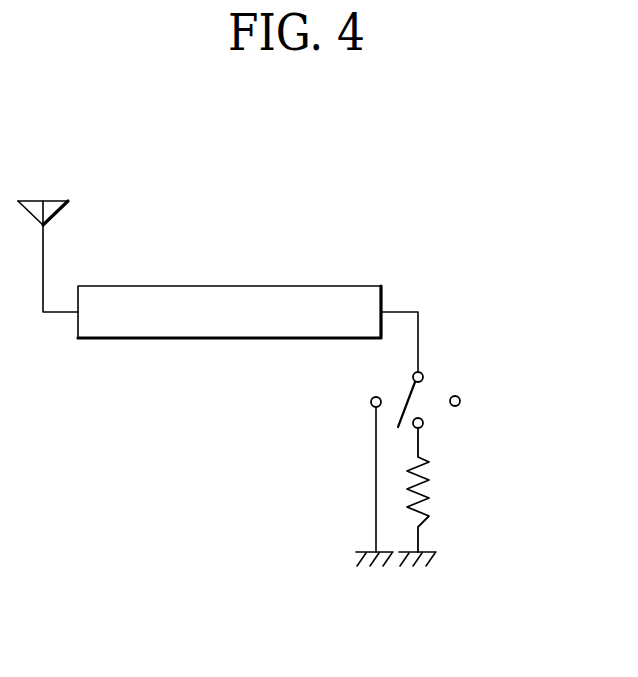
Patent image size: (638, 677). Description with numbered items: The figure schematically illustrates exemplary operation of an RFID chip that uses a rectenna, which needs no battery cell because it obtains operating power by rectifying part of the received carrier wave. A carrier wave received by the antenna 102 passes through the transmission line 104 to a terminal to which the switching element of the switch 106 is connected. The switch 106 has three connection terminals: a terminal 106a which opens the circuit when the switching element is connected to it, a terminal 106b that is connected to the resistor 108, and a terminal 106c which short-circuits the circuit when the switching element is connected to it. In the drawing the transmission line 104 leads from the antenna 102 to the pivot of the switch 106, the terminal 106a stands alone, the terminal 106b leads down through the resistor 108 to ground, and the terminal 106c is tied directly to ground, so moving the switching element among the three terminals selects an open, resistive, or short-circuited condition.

The antenna 102 is at (57, 187).
The transmission line 104 is at (187, 297).
The switch 106 is at (419, 425).
The terminal 106a is at (461, 401).
The terminal 106b is at (423, 427).
The terminal 106c is at (370, 402).
The resistor 108 is at (437, 490).